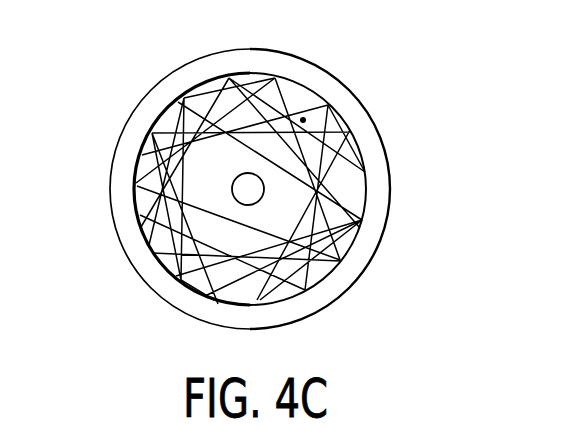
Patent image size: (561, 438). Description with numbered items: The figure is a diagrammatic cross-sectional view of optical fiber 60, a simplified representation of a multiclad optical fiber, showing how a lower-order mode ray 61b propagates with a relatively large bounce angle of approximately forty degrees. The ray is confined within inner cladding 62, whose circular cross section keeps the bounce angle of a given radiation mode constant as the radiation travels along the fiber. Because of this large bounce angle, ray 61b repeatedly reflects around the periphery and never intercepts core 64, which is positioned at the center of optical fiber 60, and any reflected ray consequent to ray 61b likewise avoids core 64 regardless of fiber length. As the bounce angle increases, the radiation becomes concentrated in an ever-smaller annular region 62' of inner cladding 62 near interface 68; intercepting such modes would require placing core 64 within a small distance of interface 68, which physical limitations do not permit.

The optical fiber 60 is at (125, 253).
The inner cladding 62 is at (250, 164).
The annular region 62' is at (351, 83).
The interface 68 is at (355, 157).
The core 64 is at (265, 183).
The lower-order mode ray 61b is at (330, 243).